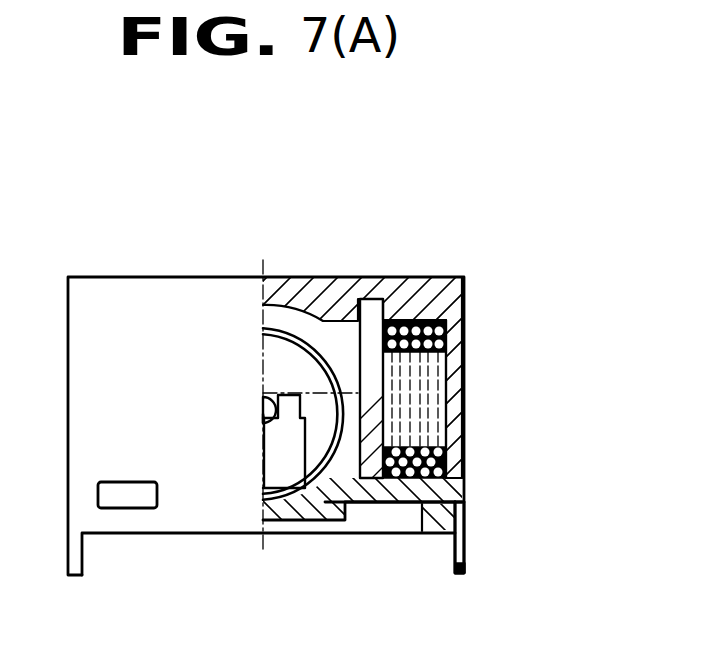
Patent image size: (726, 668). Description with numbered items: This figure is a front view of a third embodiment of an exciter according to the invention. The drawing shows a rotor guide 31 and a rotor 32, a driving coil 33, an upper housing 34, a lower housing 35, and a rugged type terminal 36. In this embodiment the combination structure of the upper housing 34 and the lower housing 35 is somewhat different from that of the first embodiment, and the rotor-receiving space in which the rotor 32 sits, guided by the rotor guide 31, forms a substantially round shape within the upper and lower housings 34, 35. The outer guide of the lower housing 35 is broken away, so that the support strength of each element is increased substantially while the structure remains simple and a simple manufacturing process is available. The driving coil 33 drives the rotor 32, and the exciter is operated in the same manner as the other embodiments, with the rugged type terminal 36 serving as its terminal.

The rotor guide 31 is at (291, 325).
The rotor 32 is at (290, 447).
The driving coil 33 is at (426, 328).
The upper housing 34 is at (453, 355).
The lower housing 35 is at (466, 487).
The rugged type terminal 36 is at (466, 553).